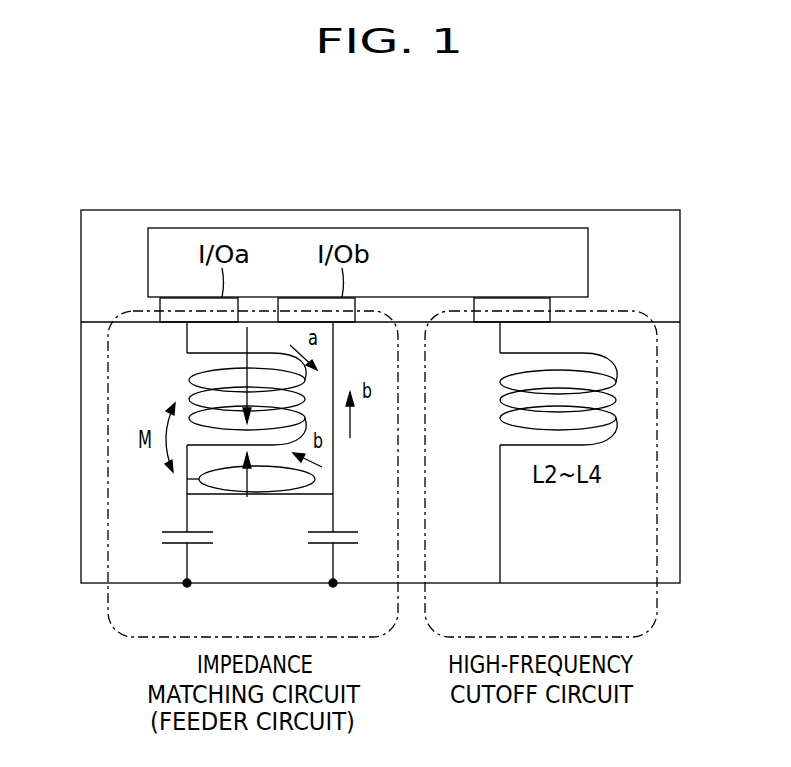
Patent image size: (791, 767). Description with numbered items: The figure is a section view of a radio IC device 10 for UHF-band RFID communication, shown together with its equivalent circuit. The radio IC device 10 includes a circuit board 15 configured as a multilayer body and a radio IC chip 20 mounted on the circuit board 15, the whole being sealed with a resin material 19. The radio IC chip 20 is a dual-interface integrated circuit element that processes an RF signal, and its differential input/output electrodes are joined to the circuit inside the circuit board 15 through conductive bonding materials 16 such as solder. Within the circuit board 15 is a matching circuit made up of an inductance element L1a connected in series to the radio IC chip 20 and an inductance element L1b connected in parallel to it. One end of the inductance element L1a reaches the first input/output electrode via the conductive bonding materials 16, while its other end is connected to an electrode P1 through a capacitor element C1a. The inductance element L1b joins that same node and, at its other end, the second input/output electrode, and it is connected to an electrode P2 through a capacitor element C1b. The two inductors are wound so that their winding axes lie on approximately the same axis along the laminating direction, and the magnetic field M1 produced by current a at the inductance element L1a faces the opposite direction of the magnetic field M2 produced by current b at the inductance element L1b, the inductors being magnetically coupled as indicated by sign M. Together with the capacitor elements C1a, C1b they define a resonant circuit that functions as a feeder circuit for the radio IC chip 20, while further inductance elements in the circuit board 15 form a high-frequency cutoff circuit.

The radio IC device 10 is at (718, 167).
The circuit board 15 is at (81, 435).
The conductive bonding materials 16 is at (172, 308).
The resin material 19 is at (122, 210).
The radio IC chip 20 is at (588, 250).
The inductance element L1a is at (224, 399).
The inductance element L1b is at (260, 496).
The magnetic field M1 is at (260, 374).
The magnetic field M2 is at (246, 501).
The capacitor element C1a is at (176, 523).
The capacitor element C1b is at (344, 523).
The electrode P1 is at (187, 601).
The electrode P2 is at (333, 601).